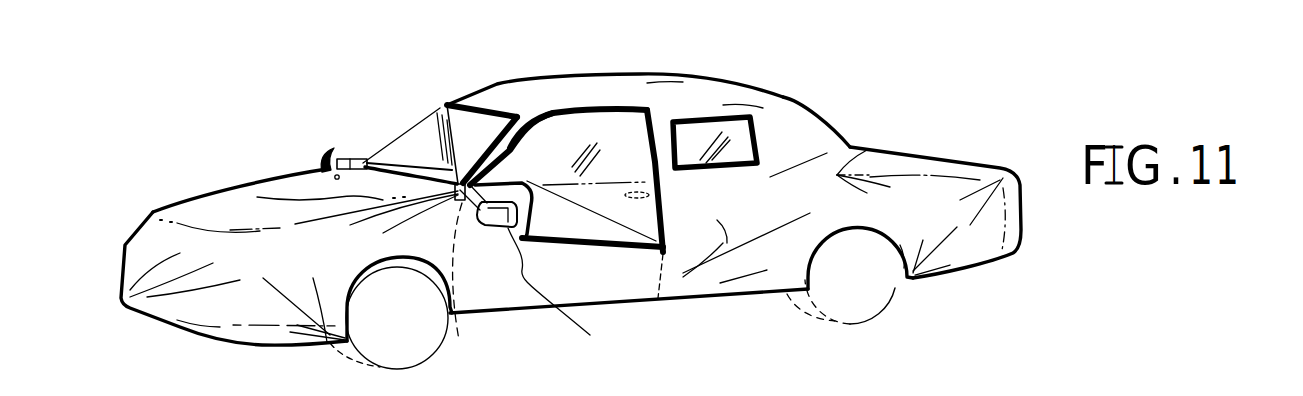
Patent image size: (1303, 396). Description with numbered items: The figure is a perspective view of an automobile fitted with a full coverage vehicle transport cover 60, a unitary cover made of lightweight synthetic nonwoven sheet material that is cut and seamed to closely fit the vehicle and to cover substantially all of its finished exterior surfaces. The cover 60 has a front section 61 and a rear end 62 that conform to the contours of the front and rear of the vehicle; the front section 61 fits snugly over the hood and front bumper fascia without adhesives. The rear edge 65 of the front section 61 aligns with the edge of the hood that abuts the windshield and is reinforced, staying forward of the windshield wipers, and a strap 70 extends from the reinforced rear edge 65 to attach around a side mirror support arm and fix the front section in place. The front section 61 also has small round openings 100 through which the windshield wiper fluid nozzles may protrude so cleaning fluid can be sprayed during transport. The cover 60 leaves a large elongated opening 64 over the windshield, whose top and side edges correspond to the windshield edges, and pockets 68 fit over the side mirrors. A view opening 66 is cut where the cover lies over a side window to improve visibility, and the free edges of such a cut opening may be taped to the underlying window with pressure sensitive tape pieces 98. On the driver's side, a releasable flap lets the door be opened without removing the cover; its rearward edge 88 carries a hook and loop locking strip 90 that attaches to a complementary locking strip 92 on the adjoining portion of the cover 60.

The cover 60 is at (796, 91).
The front section 61 is at (205, 215).
The rear end 62 is at (947, 163).
The elongated opening 64 is at (432, 130).
The rear edge 65 is at (400, 175).
The view opening 66 is at (713, 133).
The pocket 68 is at (500, 220).
The strap 70 is at (453, 342).
The rearward edge 88 is at (662, 272).
The hook and loop locking strip 90 is at (564, 289).
The complementary locking strip 92 is at (653, 120).
The pressure sensitive tape piece 98 is at (753, 138).
The opening 100 is at (323, 160).